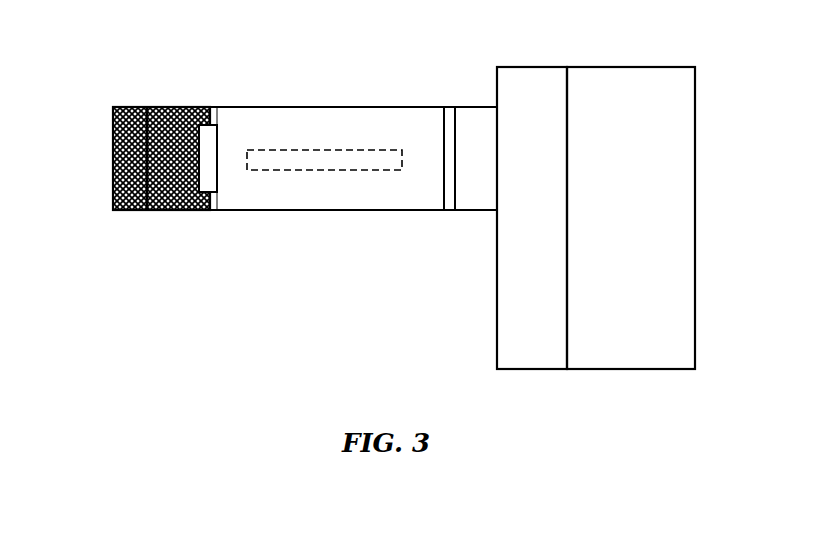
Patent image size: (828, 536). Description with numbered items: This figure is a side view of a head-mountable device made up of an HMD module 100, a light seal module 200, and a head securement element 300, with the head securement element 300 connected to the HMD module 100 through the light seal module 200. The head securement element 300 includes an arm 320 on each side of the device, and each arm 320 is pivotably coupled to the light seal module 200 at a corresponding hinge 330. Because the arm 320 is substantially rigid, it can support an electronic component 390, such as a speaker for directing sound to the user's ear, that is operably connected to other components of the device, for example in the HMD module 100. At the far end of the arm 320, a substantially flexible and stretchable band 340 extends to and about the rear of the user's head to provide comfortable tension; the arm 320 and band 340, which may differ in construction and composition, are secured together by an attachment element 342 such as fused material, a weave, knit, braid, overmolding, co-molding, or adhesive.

The HMD module 100 is at (642, 84).
The light seal module 200 is at (544, 84).
The head securement element 300 is at (235, 105).
The arm 320 is at (338, 122).
The hinge 330 is at (449, 112).
The band 340 is at (127, 157).
The attachment element 342 is at (206, 191).
The electronic component 390 is at (345, 172).